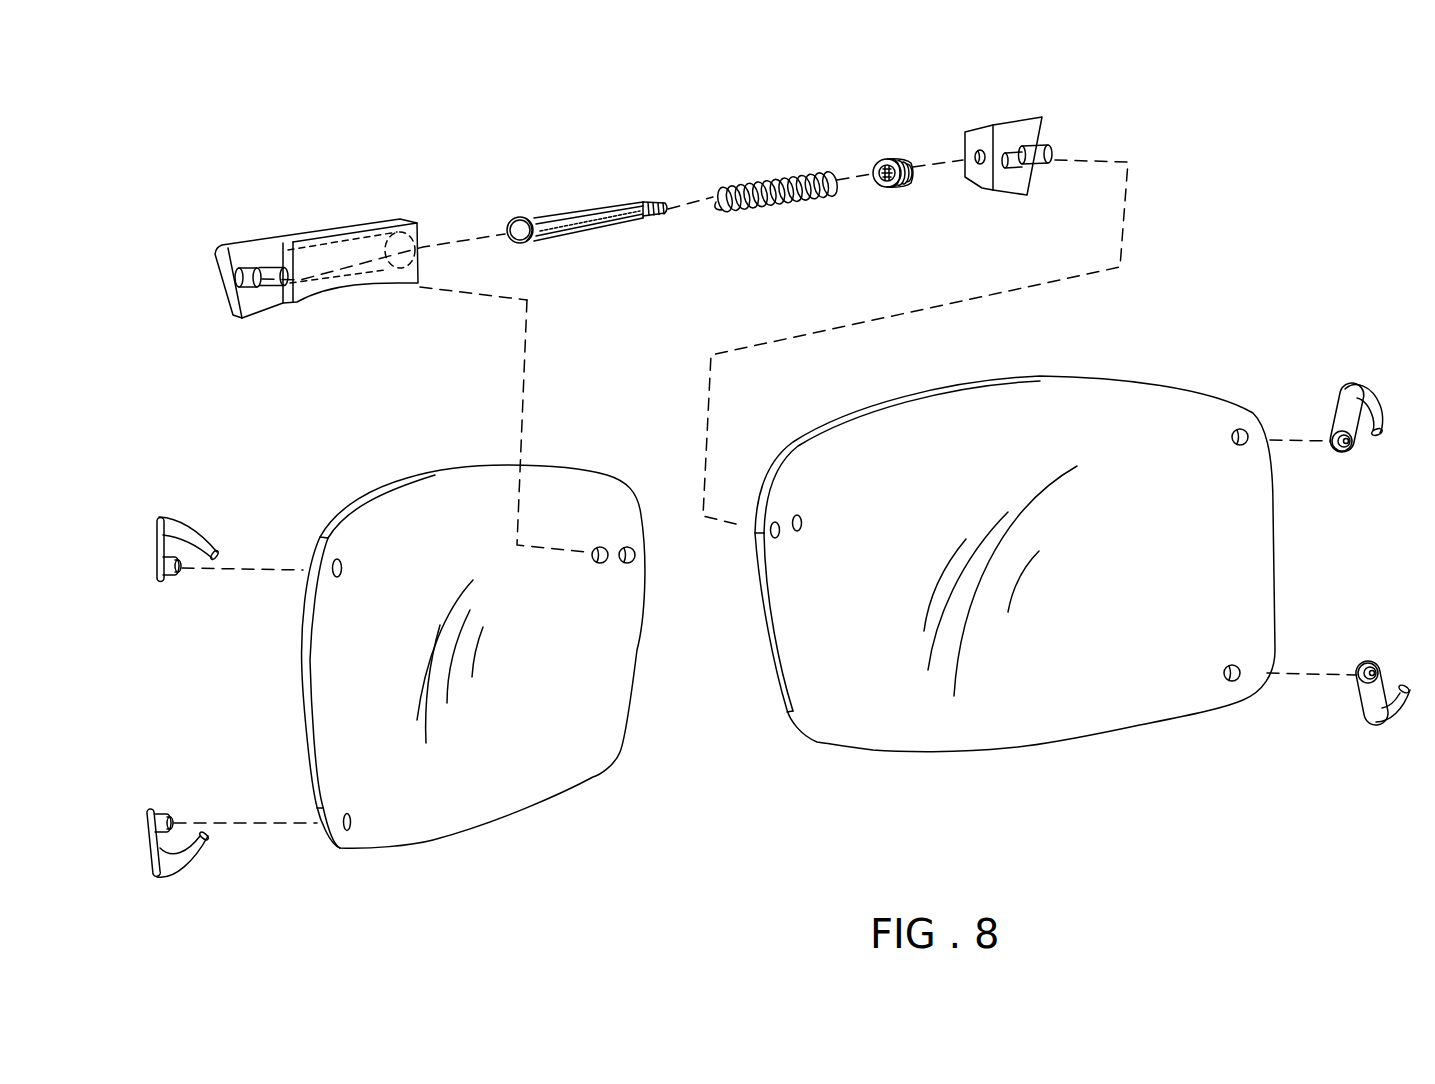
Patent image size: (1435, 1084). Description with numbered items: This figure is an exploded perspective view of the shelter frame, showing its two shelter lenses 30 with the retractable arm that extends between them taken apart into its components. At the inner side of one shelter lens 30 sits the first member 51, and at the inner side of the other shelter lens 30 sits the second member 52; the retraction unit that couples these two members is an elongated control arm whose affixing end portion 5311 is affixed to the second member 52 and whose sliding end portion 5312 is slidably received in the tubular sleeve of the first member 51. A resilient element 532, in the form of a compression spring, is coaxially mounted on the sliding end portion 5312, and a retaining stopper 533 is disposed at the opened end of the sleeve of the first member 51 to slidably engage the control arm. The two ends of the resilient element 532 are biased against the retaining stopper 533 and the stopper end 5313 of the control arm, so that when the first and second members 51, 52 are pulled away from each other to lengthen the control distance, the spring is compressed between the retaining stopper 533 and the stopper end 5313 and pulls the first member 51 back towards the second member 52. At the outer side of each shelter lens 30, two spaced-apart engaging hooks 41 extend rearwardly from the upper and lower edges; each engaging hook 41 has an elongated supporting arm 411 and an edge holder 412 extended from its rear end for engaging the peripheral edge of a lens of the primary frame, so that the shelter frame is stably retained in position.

The shelter lens 30 is at (473, 702).
The engaging hook 41 is at (772, 496).
The supporting arm 411 is at (177, 530).
The edge holder 412 is at (227, 555).
The first member 51 is at (330, 250).
The second member 52 is at (1010, 132).
The affixing end portion 5311 is at (660, 197).
The sliding end portion 5312 is at (643, 193).
The stopper end 5313 is at (497, 217).
The resilient element 532 is at (781, 205).
The retaining stopper 533 is at (915, 188).